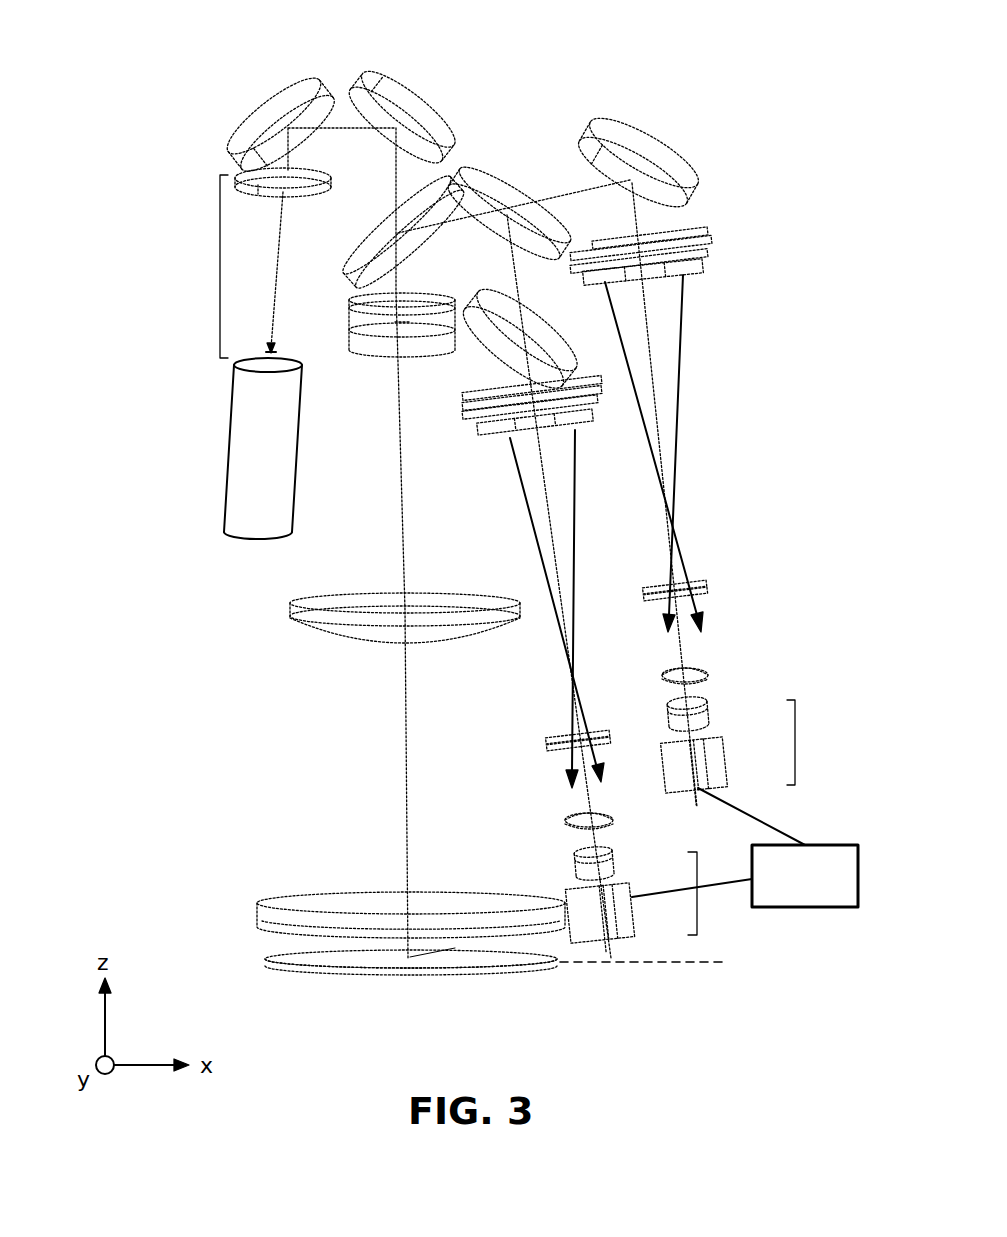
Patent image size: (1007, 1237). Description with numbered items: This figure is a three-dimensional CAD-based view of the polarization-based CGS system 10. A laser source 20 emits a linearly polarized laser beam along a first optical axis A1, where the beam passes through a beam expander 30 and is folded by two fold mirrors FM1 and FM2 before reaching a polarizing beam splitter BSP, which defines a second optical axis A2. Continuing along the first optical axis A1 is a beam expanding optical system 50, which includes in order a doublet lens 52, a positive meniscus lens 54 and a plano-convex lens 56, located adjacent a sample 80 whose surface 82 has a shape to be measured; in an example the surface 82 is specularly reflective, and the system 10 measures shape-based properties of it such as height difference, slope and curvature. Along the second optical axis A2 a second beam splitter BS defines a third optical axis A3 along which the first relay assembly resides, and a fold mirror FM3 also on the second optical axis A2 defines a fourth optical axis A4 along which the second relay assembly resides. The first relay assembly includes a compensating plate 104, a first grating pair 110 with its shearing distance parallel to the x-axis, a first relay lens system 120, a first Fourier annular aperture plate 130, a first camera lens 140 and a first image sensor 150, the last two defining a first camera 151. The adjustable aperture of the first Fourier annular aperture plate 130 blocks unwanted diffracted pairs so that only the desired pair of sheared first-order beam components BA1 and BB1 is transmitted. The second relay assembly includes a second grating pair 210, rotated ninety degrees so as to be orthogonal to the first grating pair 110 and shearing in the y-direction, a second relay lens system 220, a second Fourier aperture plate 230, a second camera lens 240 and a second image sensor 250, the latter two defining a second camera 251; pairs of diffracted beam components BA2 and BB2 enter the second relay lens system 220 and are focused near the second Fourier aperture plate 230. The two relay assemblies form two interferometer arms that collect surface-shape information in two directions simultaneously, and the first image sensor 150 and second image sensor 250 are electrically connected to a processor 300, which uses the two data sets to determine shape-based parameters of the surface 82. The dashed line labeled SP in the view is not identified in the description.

The polarization-based CGS system 10 is at (158, 103).
The laser source 20 is at (230, 428).
The beam expander 30 is at (220, 269).
The beam expanding optical system 50 is at (283, 671).
The doublet lens 52 is at (347, 338).
The positive meniscus lens 54 is at (288, 616).
The plano-convex lens 56 is at (257, 912).
The sample 80 is at (450, 975).
The surface 82 is at (275, 963).
The compensating plate 104 is at (548, 328).
The first grating pair 110 is at (463, 416).
The first relay lens system 120 is at (585, 420).
The first Fourier annular aperture plate 130 is at (547, 745).
The first camera lens 140 is at (613, 868).
The first image sensor 150 is at (628, 919).
The first camera 151 is at (708, 888).
The second grating pair 210 is at (708, 232).
The second relay lens system 220 is at (708, 270).
The second Fourier aperture plate 230 is at (708, 590).
The second camera lens 240 is at (705, 718).
The second image sensor 250 is at (720, 770).
The second camera 251 is at (795, 740).
The processor 300 is at (826, 891).
The fold mirror FM1 is at (285, 92).
The fold mirror FM2 is at (385, 85).
The fold mirror FM3 is at (672, 175).
The polarizing beam splitter BSP is at (443, 180).
The second beam splitter BS is at (490, 178).
The first optical axis A1 is at (404, 497).
The second optical axis A2 is at (566, 193).
The third optical axis A3 is at (545, 500).
The fourth optical axis A4 is at (670, 482).
The sheared first-order beam component BA1 is at (544, 618).
The sheared first-order beam component BB1 is at (575, 625).
The diffracted beam component BA2 is at (650, 468).
The diffracted beam component BB2 is at (675, 472).
The substrate plane SP is at (657, 962).